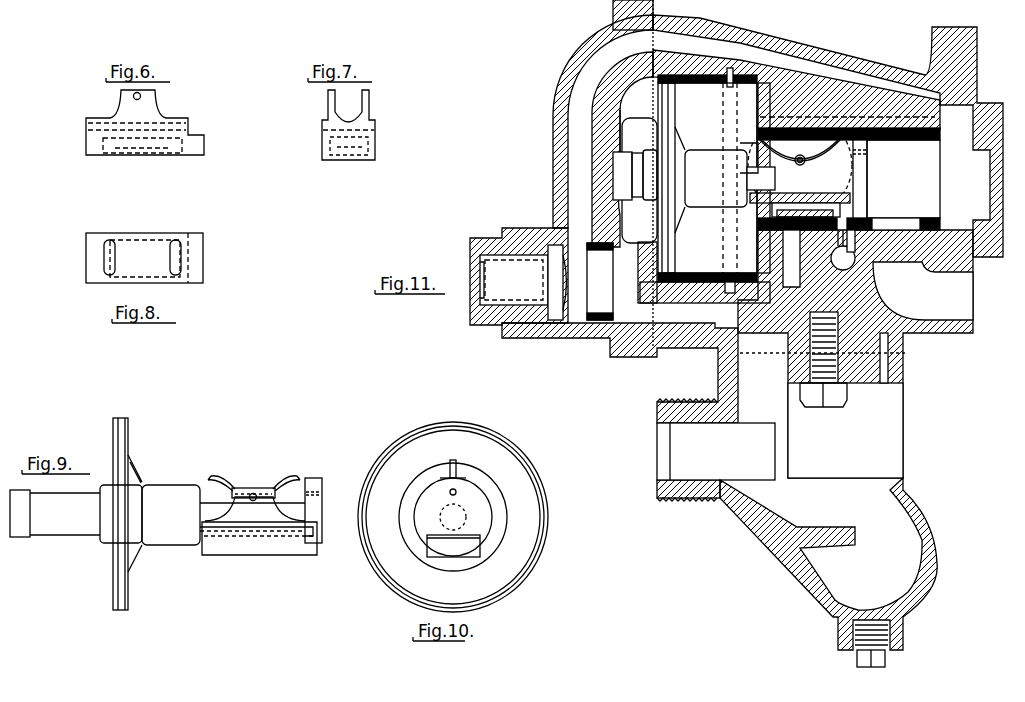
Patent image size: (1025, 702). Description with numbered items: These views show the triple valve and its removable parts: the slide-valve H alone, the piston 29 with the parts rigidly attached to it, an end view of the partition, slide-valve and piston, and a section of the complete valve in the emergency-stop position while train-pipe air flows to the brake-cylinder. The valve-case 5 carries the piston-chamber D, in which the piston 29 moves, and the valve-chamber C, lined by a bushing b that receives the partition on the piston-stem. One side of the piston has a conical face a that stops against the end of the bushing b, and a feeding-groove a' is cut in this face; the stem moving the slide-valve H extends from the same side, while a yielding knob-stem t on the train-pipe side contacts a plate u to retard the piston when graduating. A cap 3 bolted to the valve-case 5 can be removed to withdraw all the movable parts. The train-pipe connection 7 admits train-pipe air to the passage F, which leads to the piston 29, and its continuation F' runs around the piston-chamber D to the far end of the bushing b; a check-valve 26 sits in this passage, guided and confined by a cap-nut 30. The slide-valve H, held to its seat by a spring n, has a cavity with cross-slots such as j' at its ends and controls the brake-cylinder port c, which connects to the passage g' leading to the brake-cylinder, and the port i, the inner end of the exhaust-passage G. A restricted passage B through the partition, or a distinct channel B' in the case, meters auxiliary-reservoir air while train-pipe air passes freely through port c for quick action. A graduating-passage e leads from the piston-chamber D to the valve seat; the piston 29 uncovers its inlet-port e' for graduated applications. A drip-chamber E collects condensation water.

In FIG. 11, the cap 3 is at (566, 73).
In FIG. 11, the valve-case 5 is at (850, 56).
In FIG. 11, the inlet pipe 7 is at (664, 437).
In FIG. 11, the check-valve 26 is at (566, 287).
In FIG. 9, the piston 29 is at (114, 572).
In FIG. 10, the piston 29 is at (453, 517).
In FIG. 11, the piston 29 is at (672, 237).
In FIG. 11, the cap-nut 30 is at (486, 242).
In FIG. 6, the slide-valve H is at (96, 150).
In FIG. 7, the slide-valve H is at (328, 142).
In FIG. 8, the slide-valve H is at (144, 247).
In FIG. 9, the slide-valve H is at (237, 545).
In FIG. 10, the slide-valve H is at (440, 549).
In FIG. 11, the slide-valve H is at (748, 212).
In FIG. 8, the cross-slot j' is at (198, 257).
In FIG. 11, the cross-slot j' is at (805, 195).
In FIG. 9, the yielding stem or knob t is at (52, 520).
In FIG. 11, the yielding stem or knob t is at (641, 165).
In FIG. 9, the conical projection or face a is at (150, 515).
In FIG. 10, the conical projection or face a is at (468, 509).
In FIG. 9, the feeding-groove a' is at (147, 507).
In FIG. 10, the feeding-groove a' is at (459, 458).
In FIG. 9, the rod g is at (318, 497).
In FIG. 10, the rod g is at (452, 517).
In FIG. 11, the rod g is at (869, 169).
In FIG. 11, the passage g' is at (923, 291).
In FIG. 9, the spring n is at (233, 488).
In FIG. 11, the spring n is at (791, 156).
In FIG. 10, the restricted passage B is at (475, 477).
In FIG. 11, the restricted passage B is at (844, 179).
In FIG. 11, the restricted passage channel B' is at (796, 90).
In FIG. 11, the bushing b is at (905, 141).
In FIG. 11, the valve-chamber C is at (903, 179).
In FIG. 11, the brake-cylinder port c is at (893, 224).
In FIG. 11, the piston-chamber D is at (705, 173).
In FIG. 11, the drip-chamber E is at (828, 572).
In FIG. 11, the graduating-passage e is at (855, 348).
In FIG. 11, the inlet-port e' is at (707, 90).
In FIG. 11, the passage F is at (636, 332).
In FIG. 11, the passage continuation F' is at (687, 149).
In FIG. 11, the exhaust-passage G is at (846, 262).
In FIG. 11, the port i is at (860, 243).
In FIG. 11, the plate u is at (611, 150).